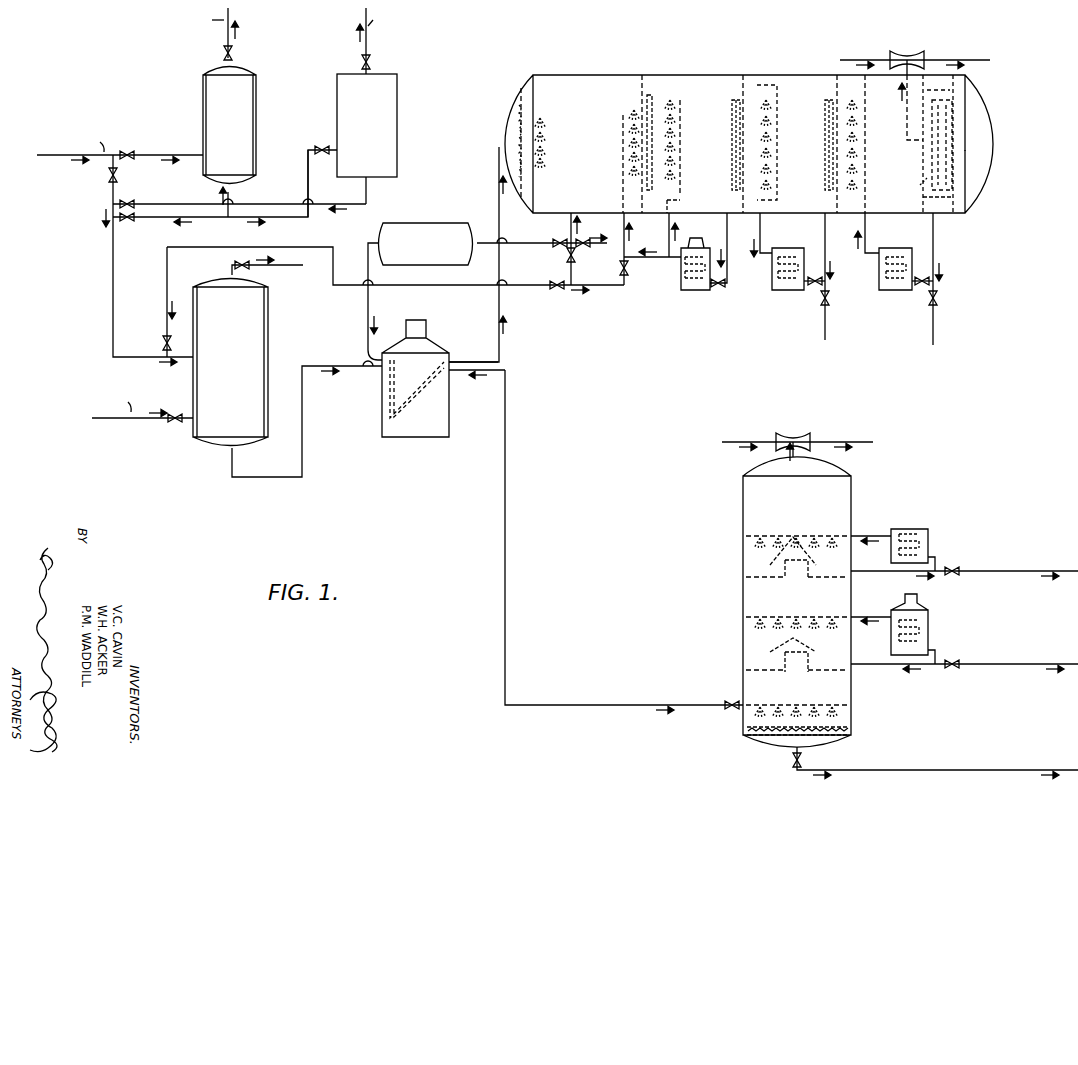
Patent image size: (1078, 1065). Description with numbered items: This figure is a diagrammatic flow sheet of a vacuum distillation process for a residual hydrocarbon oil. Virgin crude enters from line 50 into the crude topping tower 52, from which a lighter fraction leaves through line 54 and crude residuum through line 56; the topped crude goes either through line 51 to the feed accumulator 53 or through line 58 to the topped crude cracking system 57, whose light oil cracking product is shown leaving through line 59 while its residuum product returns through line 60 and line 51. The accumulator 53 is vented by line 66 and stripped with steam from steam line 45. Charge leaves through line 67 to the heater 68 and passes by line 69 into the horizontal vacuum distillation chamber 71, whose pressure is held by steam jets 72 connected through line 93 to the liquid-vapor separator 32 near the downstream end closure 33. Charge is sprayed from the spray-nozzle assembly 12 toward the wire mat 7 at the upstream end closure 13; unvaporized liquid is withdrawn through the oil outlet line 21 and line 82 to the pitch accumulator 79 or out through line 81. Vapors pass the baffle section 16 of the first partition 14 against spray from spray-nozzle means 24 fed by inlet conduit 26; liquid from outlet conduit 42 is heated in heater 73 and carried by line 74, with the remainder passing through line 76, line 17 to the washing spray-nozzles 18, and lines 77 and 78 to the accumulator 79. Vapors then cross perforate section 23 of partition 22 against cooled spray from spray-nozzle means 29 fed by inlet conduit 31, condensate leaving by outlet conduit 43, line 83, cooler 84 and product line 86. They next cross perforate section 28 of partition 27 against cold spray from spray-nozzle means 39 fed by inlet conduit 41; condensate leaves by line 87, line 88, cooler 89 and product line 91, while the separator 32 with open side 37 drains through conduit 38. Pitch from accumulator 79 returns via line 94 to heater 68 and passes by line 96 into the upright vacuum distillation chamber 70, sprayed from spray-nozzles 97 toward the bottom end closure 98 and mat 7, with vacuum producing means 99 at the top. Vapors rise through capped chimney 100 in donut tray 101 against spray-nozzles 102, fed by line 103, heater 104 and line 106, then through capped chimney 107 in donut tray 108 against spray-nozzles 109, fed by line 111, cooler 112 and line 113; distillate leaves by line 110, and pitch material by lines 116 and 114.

The wire mat 7 is at (519, 128).
The spray-nozzle assembly 12 is at (547, 146).
The upstream end closure 13 is at (516, 122).
The first partition 14 is at (643, 82).
The baffle section 16 is at (652, 100).
The line 17 is at (624, 225).
The spray-nozzles 18 is at (634, 106).
The oil outlet line 21 is at (571, 228).
The partition 22 is at (743, 80).
The perforate section 23 is at (732, 106).
The spray-nozzle means 24 is at (680, 118).
The inlet conduit 26 is at (680, 203).
The partition 27 is at (838, 82).
The perforate section 28 is at (825, 105).
The spray-nozzle means 29 is at (757, 90).
The inlet conduit 31 is at (760, 230).
The liquid-vapor separator 32 is at (920, 185).
The downstream end closure 33 is at (988, 160).
The open side 37 is at (955, 140).
The conduit 38 is at (923, 200).
The spray-nozzle means 39 is at (860, 104).
The inlet conduit 41 is at (865, 228).
The outlet conduit 42 is at (727, 246).
The outlet conduit 43 is at (826, 240).
The steam line 45 is at (151, 418).
The line 50 is at (63, 158).
The line 51 is at (113, 277).
The crude topping tower 52 is at (256, 110).
The feed accumulator 53 is at (268, 330).
The line 54 is at (226, 55).
The line 56 is at (232, 200).
The topped crude cracking system 57 is at (397, 106).
The line 58 is at (308, 152).
The light oil cracking product line 59 is at (368, 52).
The line 60 is at (366, 198).
The vent line 66 is at (280, 265).
The line 67 is at (302, 413).
The heater 68 is at (382, 420).
The line 69 is at (499, 188).
The upright vacuum distillation chamber 70 is at (852, 500).
The horizontal vacuum distillation chamber 71 is at (772, 73).
The steam jets 72 is at (903, 52).
The heater 73 is at (690, 291).
The line 74 is at (678, 259).
The line 76 is at (626, 269).
The line 77 is at (607, 287).
The line 78 is at (567, 272).
The pitch accumulator 79 is at (422, 223).
The line 81 is at (590, 250).
The line 82 is at (506, 247).
The line 83 is at (810, 290).
The cooler 84 is at (772, 272).
The line 86 is at (826, 316).
The line 87 is at (934, 240).
The line 88 is at (920, 290).
The cooler 89 is at (879, 272).
The line 91 is at (934, 316).
The line 93 is at (907, 120).
The line 94 is at (368, 320).
The line 96 is at (505, 522).
The spray-nozzles 97 is at (848, 712).
The bottom end closure 98 is at (826, 744).
The vacuum producing means 99 is at (796, 436).
The capped chimney 100 is at (808, 676).
The donut tray 101 is at (746, 668).
The spray-nozzles 102 is at (803, 616).
The line 103 is at (884, 662).
The heater 104 is at (929, 628).
The line 106 is at (857, 617).
The capped chimney 107 is at (806, 578).
The donut tray 108 is at (746, 577).
The spray-nozzles 109 is at (806, 534).
The line 110 is at (998, 571).
The line 111 is at (870, 573).
The cooler 112 is at (929, 547).
The line 113 is at (860, 536).
The line 114 is at (905, 770).
The line 116 is at (1000, 664).